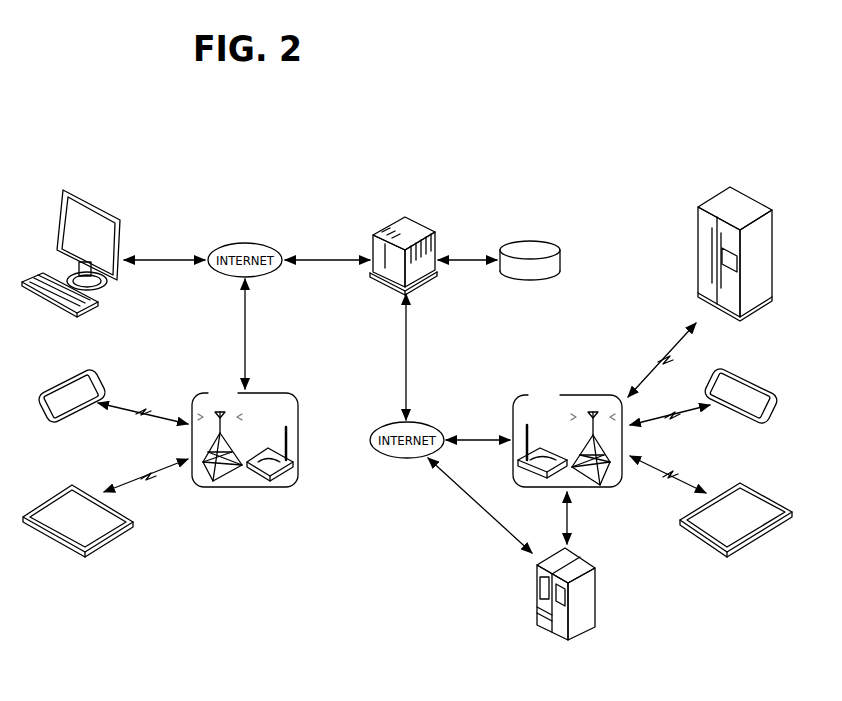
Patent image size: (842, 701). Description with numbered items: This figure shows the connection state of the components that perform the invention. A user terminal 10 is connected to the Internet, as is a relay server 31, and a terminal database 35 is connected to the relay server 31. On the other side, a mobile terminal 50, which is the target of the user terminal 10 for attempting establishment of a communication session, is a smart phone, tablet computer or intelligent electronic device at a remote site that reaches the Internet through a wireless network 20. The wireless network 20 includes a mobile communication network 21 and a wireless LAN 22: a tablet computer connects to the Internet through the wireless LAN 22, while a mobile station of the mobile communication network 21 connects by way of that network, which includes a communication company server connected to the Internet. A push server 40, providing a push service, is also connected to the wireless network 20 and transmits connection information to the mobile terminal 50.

The user terminal 10 is at (91, 205).
The wireless network 20 is at (407, 436).
The mobile communication network 21 is at (229, 448).
The wireless LAN 22 is at (266, 452).
The relay server 31 is at (389, 226).
The terminal database 35 is at (532, 248).
The push server 40 is at (588, 595).
The mobile terminal 50 is at (718, 203).